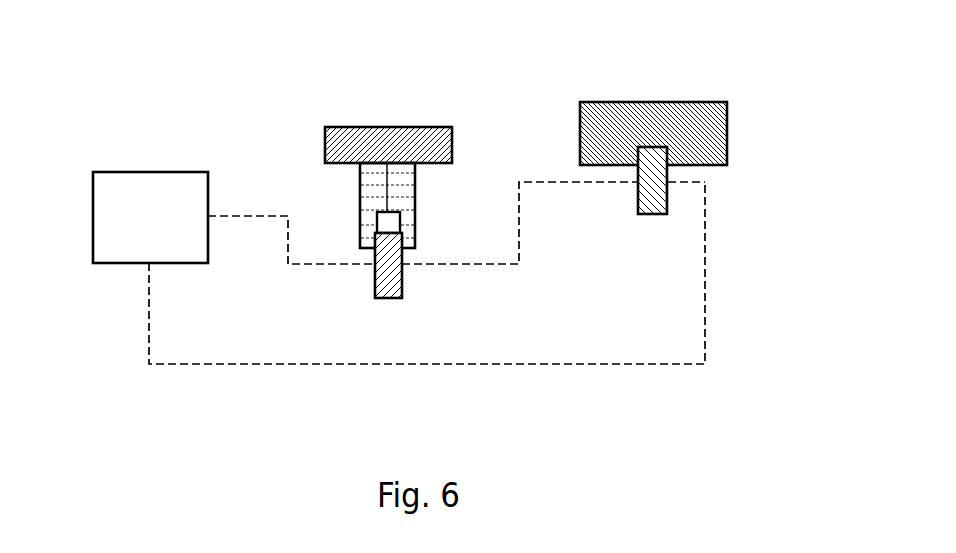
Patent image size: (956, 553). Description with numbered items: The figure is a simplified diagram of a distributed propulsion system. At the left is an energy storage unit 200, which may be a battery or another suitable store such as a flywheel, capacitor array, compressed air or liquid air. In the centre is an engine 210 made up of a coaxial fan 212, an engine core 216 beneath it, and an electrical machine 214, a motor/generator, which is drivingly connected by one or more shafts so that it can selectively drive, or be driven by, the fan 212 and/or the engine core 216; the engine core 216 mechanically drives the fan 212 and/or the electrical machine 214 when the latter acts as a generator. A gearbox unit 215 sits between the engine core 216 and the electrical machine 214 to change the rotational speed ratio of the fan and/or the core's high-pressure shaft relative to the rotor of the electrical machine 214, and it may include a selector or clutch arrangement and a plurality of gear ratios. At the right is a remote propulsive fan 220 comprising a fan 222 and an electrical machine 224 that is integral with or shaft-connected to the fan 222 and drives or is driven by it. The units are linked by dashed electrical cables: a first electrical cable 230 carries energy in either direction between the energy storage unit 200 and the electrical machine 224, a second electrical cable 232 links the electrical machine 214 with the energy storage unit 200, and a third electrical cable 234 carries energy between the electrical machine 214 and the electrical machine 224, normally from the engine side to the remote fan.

The energy storage unit 200 is at (130, 170).
The engine 210 is at (357, 94).
The coaxial fan 212 is at (453, 142).
The electrical machine 214 is at (385, 300).
The gearbox unit 215 is at (383, 230).
The engine core 216 is at (418, 197).
The remote propulsive fan 220 is at (615, 73).
The fan 222 is at (727, 127).
The electrical machine 224 is at (652, 214).
The first electrical cable 230 is at (149, 328).
The second electrical cable 232 is at (262, 217).
The third electrical cable 234 is at (463, 267).